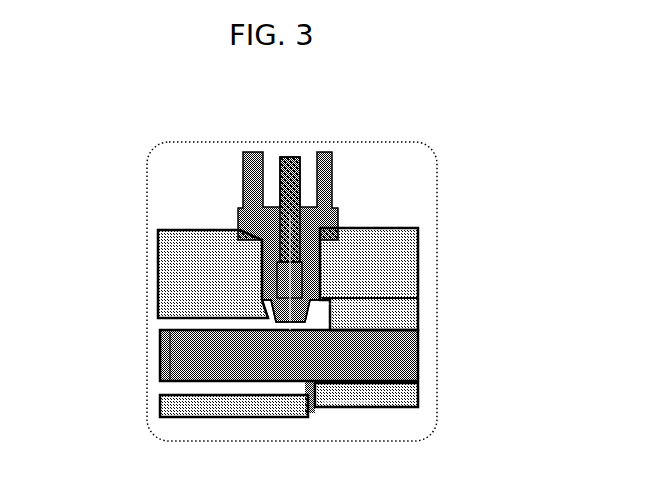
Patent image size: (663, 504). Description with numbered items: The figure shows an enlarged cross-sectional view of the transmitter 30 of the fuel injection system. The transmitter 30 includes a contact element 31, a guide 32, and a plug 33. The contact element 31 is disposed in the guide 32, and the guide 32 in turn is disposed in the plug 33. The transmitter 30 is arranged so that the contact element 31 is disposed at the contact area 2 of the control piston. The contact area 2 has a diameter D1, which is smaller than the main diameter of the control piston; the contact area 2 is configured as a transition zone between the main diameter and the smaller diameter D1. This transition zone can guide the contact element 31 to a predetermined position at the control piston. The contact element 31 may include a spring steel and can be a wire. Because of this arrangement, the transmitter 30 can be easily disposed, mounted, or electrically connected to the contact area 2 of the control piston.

The transmitter 30 is at (348, 172).
The guide 32 is at (288, 185).
The plug 33 is at (322, 227).
The contact element 31 is at (273, 322).
The diameter D1 is at (162, 353).
The contact area 2 is at (266, 359).